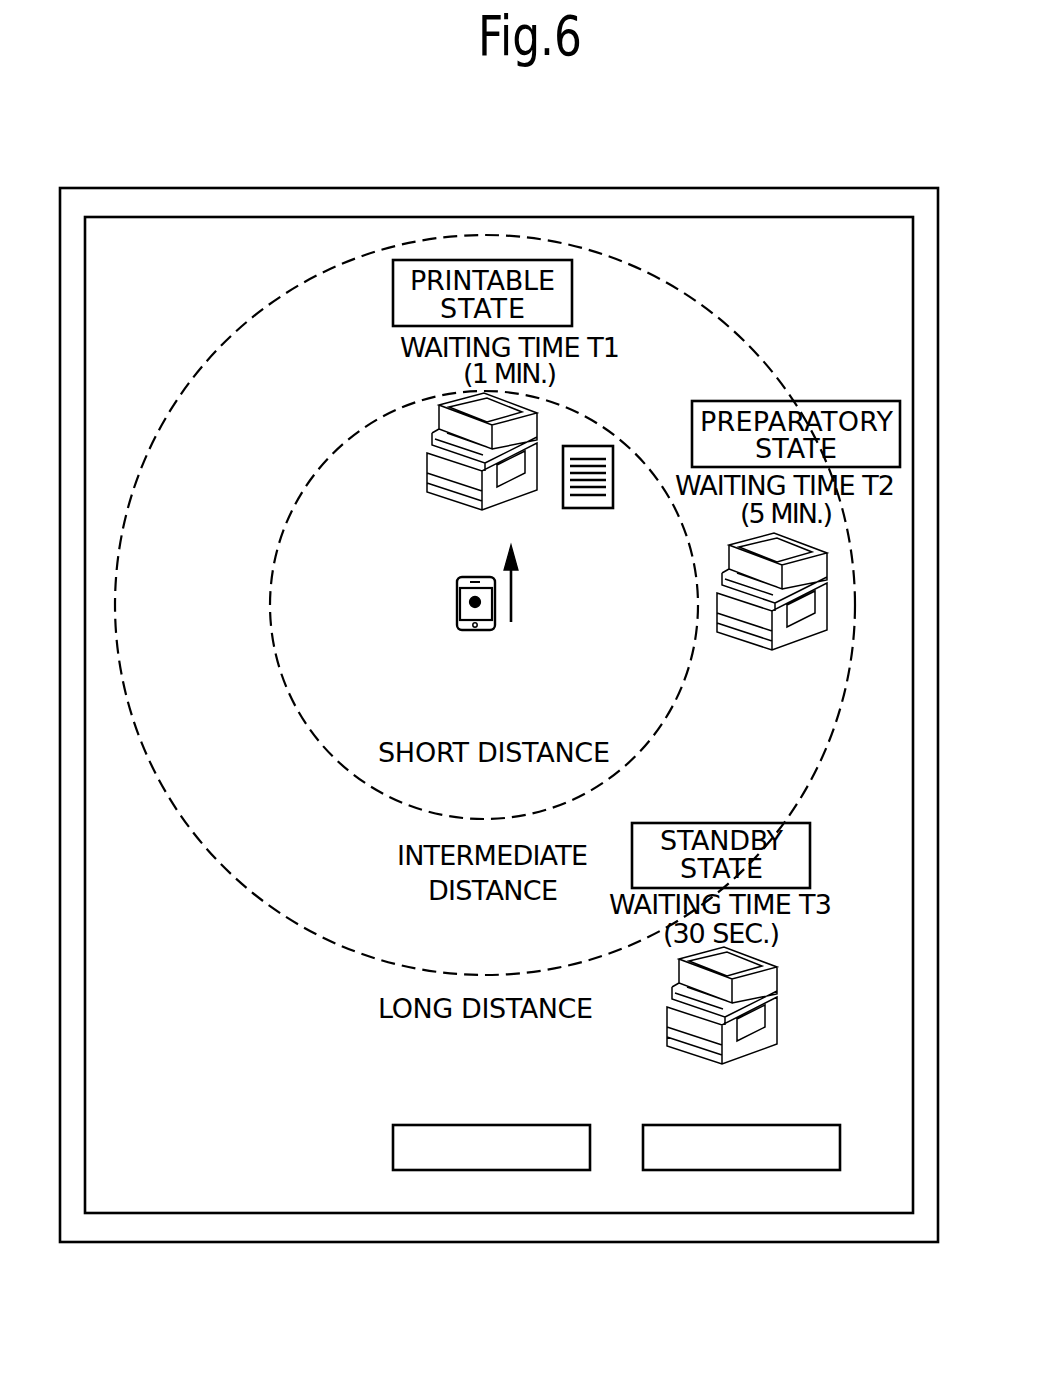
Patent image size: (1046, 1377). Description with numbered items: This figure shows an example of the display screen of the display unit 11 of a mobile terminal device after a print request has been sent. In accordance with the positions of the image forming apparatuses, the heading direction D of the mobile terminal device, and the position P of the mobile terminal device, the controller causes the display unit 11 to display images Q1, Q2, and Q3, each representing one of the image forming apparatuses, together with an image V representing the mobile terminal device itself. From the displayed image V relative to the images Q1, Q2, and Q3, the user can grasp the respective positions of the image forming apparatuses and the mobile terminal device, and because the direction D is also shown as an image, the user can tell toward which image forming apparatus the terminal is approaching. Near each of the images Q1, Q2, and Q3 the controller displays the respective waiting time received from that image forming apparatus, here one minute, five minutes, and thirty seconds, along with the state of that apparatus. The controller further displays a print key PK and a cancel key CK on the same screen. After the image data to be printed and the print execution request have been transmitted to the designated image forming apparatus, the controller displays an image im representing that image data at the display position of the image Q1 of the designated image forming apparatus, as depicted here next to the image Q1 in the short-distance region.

The display unit 11 is at (338, 188).
The image representing image forming apparatus Q1 is at (538, 450).
The image representing image forming apparatus Q2 is at (826, 605).
The image representing image forming apparatus Q3 is at (672, 1008).
The image representing image data im is at (613, 452).
The direction D is at (511, 595).
The image representing mobile terminal device V is at (458, 623).
The position of mobile terminal device P is at (477, 604).
The print key PK is at (490, 1171).
The cancel key CK is at (741, 1171).